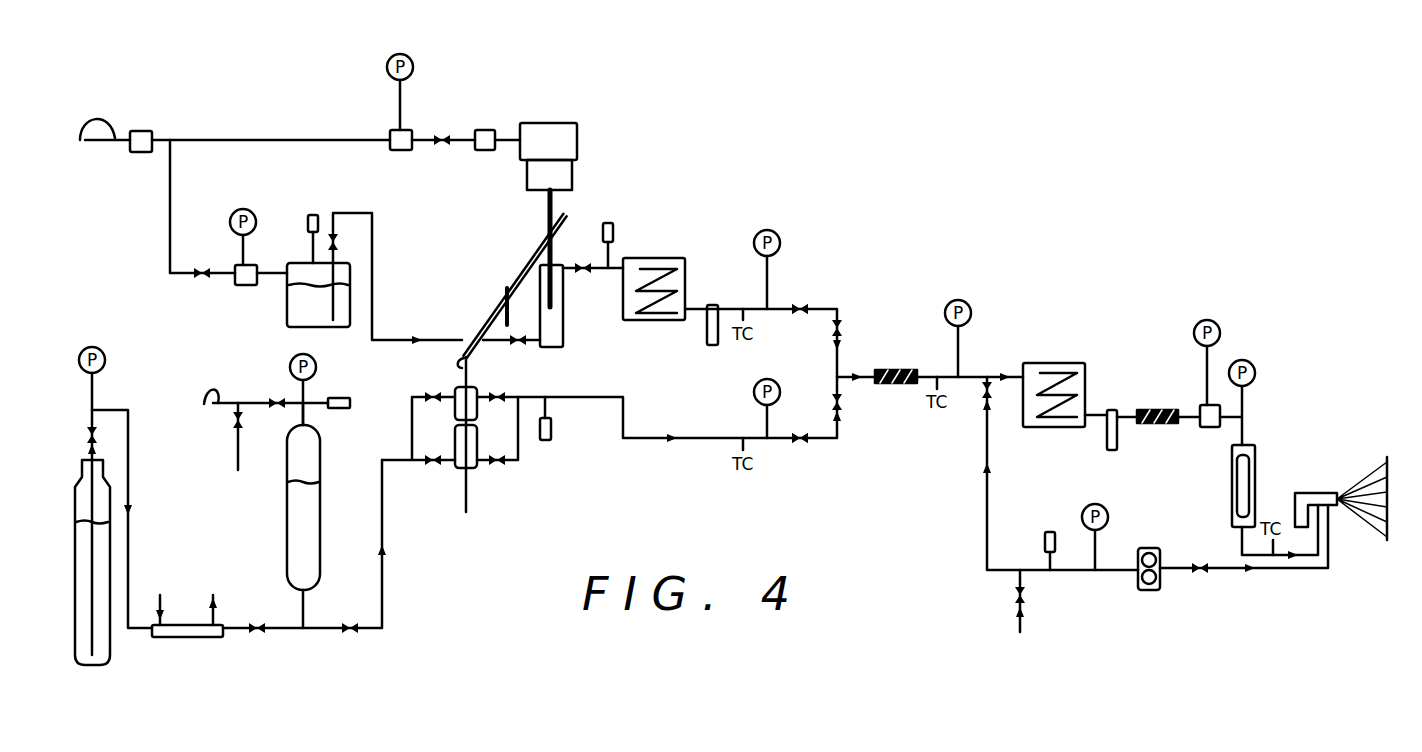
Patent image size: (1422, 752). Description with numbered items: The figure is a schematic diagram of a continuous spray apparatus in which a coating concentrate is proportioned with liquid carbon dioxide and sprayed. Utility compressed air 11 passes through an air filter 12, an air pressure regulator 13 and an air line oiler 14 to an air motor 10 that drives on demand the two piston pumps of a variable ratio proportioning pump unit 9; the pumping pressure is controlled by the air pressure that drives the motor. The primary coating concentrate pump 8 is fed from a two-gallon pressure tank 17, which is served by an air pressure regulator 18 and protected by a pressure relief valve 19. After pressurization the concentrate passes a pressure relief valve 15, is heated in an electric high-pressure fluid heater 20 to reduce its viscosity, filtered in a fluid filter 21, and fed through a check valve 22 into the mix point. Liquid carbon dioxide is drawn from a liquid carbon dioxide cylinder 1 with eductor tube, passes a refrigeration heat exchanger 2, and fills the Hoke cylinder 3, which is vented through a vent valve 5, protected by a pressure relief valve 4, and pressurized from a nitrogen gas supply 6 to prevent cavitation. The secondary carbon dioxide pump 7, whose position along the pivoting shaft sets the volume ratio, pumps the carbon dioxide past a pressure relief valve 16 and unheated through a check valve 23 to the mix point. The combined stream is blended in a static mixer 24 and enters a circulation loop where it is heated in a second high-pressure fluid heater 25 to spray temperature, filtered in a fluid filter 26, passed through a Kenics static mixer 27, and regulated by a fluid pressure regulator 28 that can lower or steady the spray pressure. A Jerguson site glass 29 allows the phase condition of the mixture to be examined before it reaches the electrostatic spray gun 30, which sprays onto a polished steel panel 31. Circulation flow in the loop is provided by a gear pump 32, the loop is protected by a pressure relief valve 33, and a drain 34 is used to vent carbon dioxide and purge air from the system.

The liquid carbon dioxide cylinder 1 is at (76, 650).
The refrigeration heat exchanger 2 is at (206, 622).
The Hoke cylinder 3 is at (317, 558).
The pressure relief valve 4 is at (350, 409).
The vent valve 5 is at (238, 437).
The nitrogen gas supply 6 is at (201, 405).
The carbon dioxide pump 7 is at (463, 470).
The coating concentrate pump 8 is at (558, 310).
The proportioning pump unit 9 is at (492, 318).
The air motor 10 is at (577, 143).
The utility compressed air supply 11 is at (87, 137).
The air filter 12 is at (133, 133).
The air pressure regulator 13 is at (392, 151).
The air line oiler 14 is at (480, 151).
The pressure relief valve 15 is at (614, 243).
The pressure relief valve 16 is at (548, 441).
The pressure tank 17 is at (320, 318).
The air pressure regulator 18 is at (234, 285).
The pressure relief valve 19 is at (306, 223).
The high-pressure fluid heater 20 is at (652, 258).
The high-pressure fluid filter 21 is at (706, 341).
The check valve 22 is at (792, 303).
The check valve 23 is at (792, 445).
The static mixer 24 is at (882, 370).
The high-pressure fluid heater 25 is at (1045, 363).
The high-pressure fluid filter 26 is at (1105, 449).
The static mixer 27 is at (1170, 410).
The fluid pressure regulator 28 is at (1202, 405).
The site glass 29 is at (1232, 464).
The electrostatic spray gun 30 is at (1316, 493).
The steel panel 31 is at (1387, 540).
The gear pump 32 is at (1140, 590).
The pressure relief valve 33 is at (1047, 532).
The drain 34 is at (1022, 618).